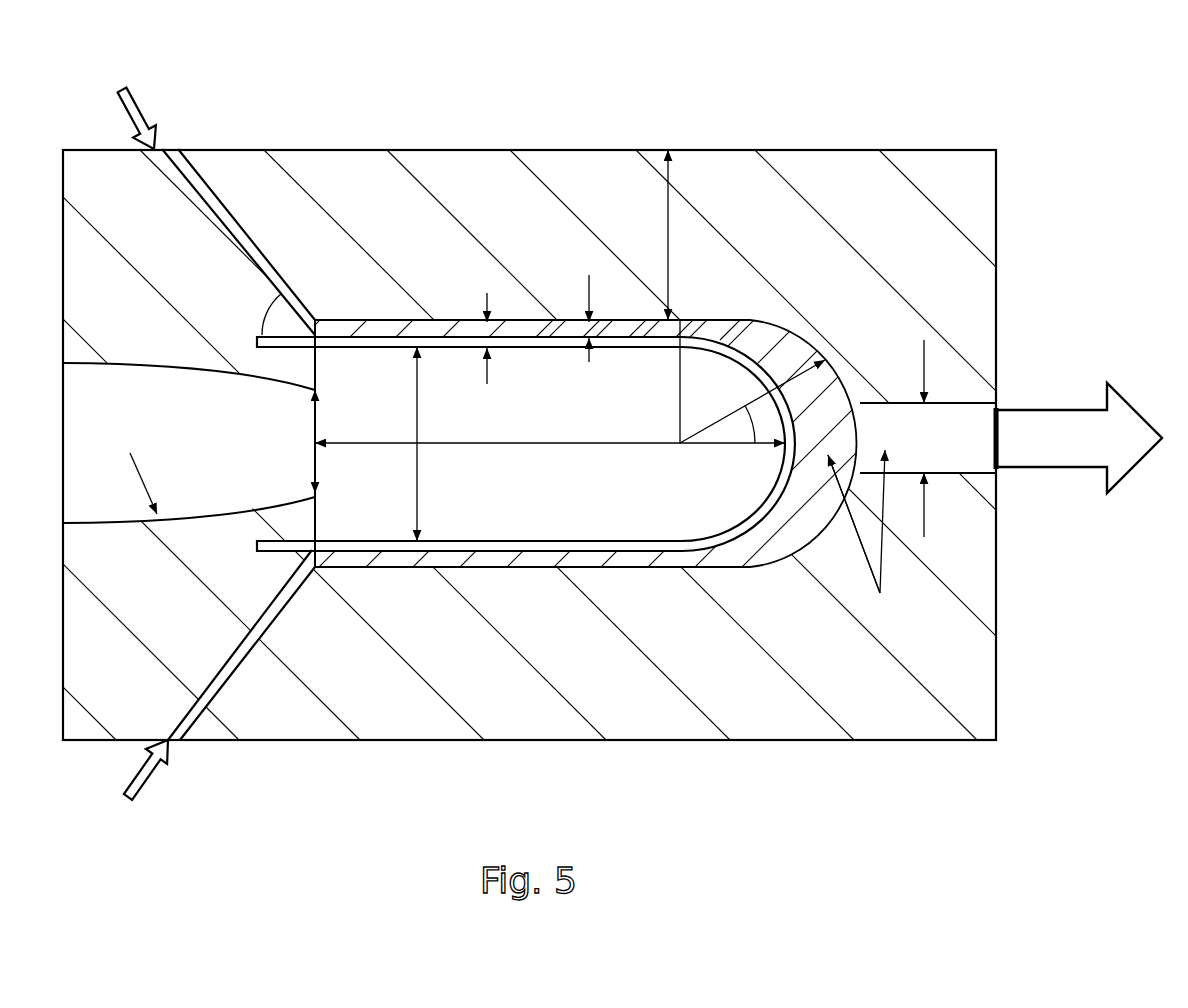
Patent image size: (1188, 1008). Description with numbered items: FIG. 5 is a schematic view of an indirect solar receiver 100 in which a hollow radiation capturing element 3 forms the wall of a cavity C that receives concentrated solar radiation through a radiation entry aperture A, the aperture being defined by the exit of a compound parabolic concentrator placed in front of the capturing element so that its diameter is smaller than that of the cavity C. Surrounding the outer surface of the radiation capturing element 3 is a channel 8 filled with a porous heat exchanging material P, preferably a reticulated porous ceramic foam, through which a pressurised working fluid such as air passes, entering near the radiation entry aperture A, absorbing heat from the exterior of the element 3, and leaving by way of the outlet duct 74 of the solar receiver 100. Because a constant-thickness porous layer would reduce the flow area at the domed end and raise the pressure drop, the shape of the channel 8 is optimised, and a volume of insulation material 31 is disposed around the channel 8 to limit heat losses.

The indirect solar receiver 100 is at (1054, 126).
The insulation material 31 is at (621, 211).
The channel 8 is at (348, 322).
The radiation capturing element 3 is at (675, 340).
The outlet duct 74 is at (947, 463).
The porous heat exchanging material P is at (763, 333).
The radiation entry aperture A is at (316, 460).
The cavity C is at (600, 503).